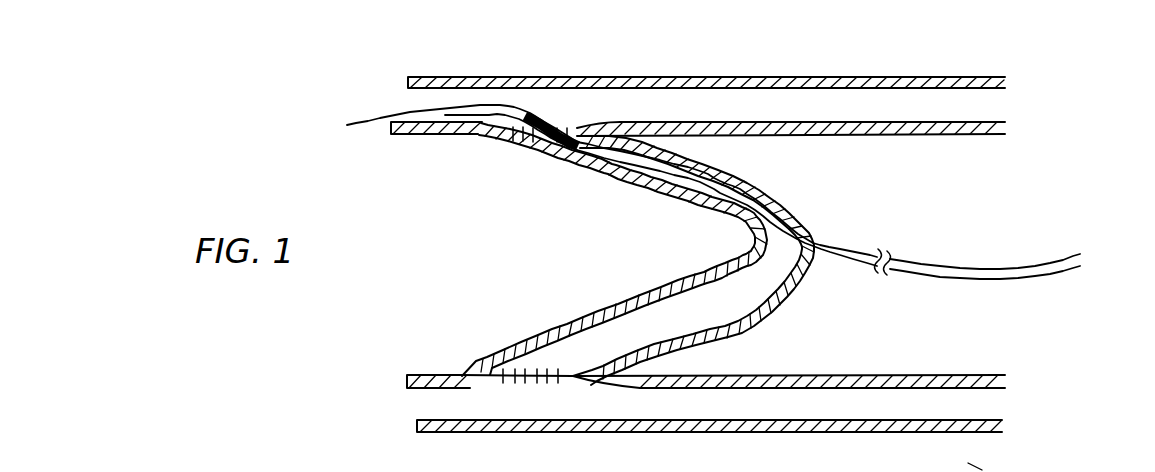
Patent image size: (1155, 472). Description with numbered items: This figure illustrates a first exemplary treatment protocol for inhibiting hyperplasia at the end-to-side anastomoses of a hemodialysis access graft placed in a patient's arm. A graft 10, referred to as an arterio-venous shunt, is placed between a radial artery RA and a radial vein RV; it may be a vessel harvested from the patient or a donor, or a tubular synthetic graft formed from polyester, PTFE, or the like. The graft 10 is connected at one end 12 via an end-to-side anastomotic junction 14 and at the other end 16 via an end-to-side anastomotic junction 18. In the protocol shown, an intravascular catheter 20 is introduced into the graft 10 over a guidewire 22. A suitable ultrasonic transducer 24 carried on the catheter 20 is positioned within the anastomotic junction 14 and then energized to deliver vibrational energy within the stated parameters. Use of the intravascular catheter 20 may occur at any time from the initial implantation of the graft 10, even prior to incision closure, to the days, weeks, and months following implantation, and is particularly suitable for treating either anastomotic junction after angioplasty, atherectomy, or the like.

The graft 10 is at (746, 282).
The one end of the graft 12 is at (547, 146).
The end-to-side anastomotic junction 14 is at (565, 134).
The other end of the graft 16 is at (548, 368).
The end-to-side anastomotic junction 18 is at (521, 389).
The intravascular catheter 20 is at (843, 245).
The guidewire 22 is at (375, 116).
The ultrasonic transducer 24 is at (514, 138).
The radial vein RV is at (921, 78).
The radial artery RA is at (842, 429).